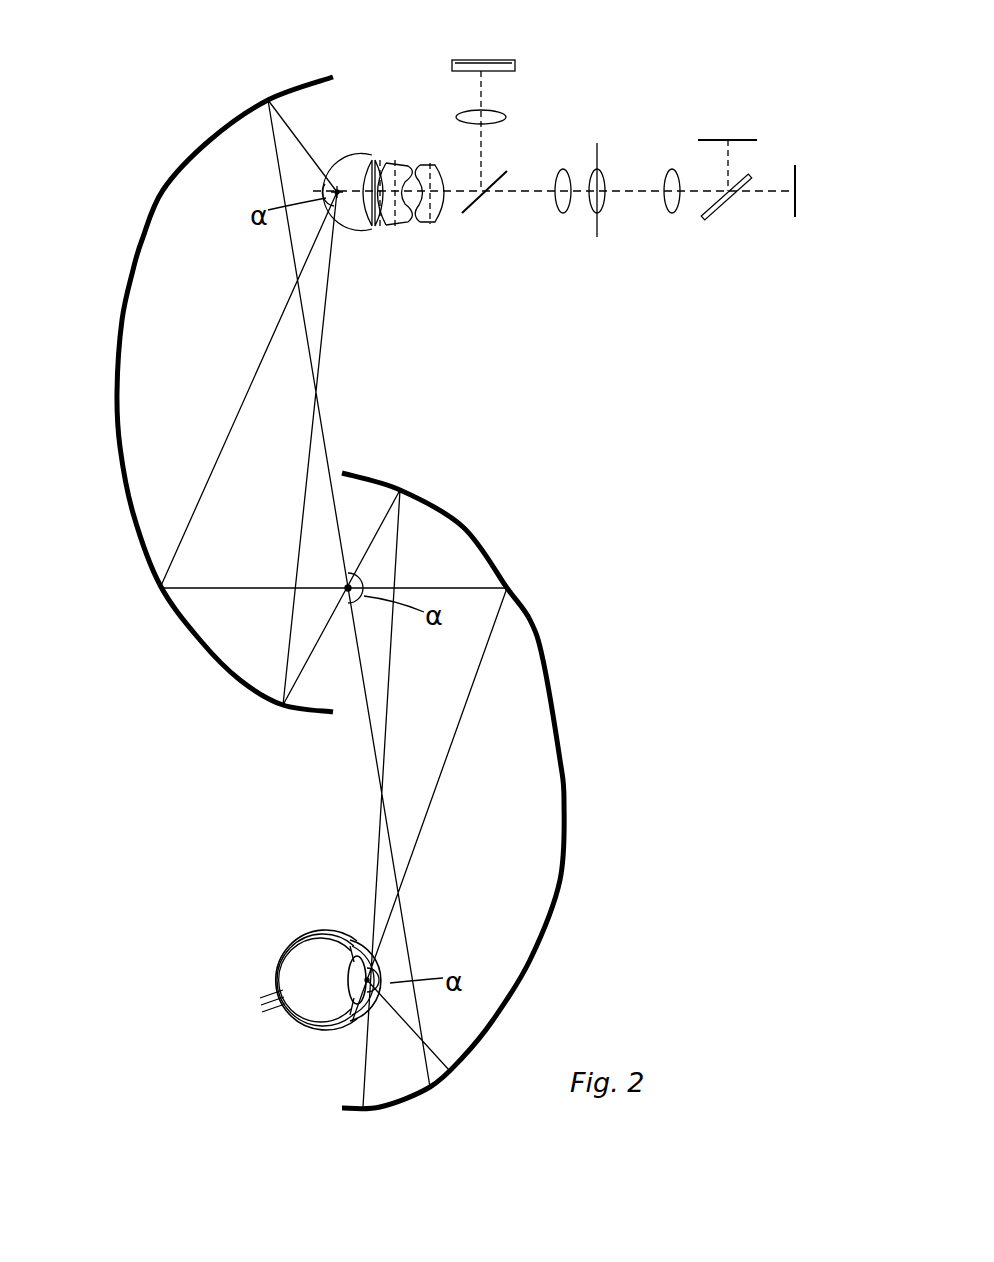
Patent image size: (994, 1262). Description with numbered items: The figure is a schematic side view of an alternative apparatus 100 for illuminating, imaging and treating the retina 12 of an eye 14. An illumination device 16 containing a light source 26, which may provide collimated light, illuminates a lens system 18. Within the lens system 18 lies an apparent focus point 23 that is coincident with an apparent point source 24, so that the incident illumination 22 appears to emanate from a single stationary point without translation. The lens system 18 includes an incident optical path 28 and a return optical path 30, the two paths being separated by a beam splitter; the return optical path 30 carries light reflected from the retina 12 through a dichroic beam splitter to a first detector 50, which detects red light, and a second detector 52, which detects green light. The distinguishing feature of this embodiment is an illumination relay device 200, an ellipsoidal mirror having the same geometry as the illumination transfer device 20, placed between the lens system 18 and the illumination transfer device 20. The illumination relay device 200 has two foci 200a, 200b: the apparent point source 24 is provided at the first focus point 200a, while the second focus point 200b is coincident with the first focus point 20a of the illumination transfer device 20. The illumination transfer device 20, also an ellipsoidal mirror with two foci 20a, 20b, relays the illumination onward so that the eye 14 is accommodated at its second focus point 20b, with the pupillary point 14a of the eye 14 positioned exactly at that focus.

The apparatus 100 is at (103, 102).
The illumination relay device 200 is at (118, 337).
The first focus point of the illumination relay device 200a is at (334, 191).
The second focus point of the illumination relay device 200b is at (346, 586).
The incident illumination 22 is at (292, 262).
The apparent point source 24 is at (336, 188).
The apparent focus point 23 is at (340, 206).
The lens system 18 is at (378, 158).
The illumination device 16 is at (452, 62).
The light source 26 is at (500, 59).
The incident optical path 28 is at (480, 97).
The return optical path 30 is at (500, 188).
The first detector 50 is at (740, 140).
The second detector 52 is at (796, 176).
The illumination transfer device 20 is at (504, 578).
The first focus point of the illumination transfer device 20a is at (362, 585).
The second focus point of the illumination transfer device 20b is at (372, 978).
The retina 12 is at (306, 950).
The eye 14 is at (296, 1016).
The pupillary point 14a is at (385, 996).